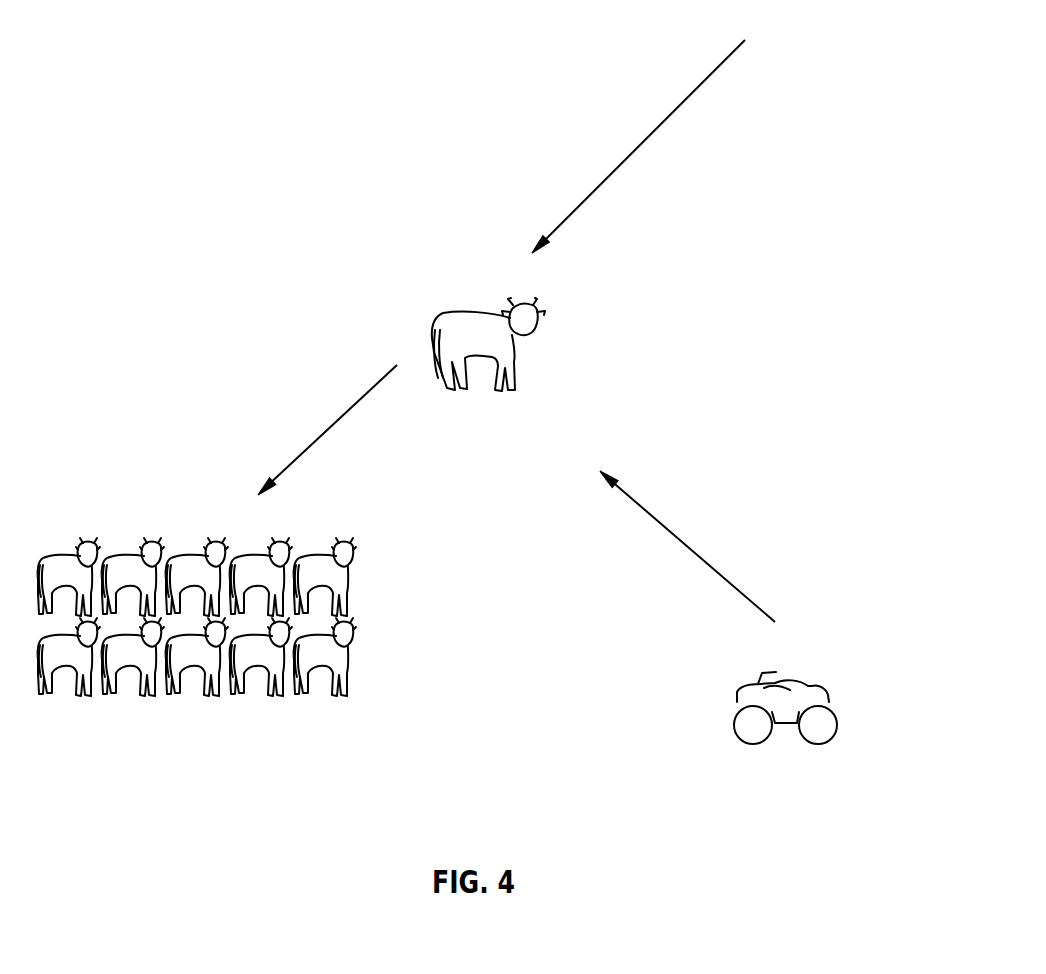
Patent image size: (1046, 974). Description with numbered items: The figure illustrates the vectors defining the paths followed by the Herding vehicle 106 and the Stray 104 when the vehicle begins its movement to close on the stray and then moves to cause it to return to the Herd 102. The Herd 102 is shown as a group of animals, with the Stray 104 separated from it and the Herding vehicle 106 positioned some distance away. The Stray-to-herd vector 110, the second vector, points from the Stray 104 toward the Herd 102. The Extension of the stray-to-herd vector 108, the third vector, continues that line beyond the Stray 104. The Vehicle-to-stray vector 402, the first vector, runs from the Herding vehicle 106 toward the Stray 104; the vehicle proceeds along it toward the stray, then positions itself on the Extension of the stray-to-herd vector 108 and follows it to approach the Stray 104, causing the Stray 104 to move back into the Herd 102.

The herd 102 is at (233, 740).
The stray 104 is at (518, 436).
The herding vehicle 106 is at (885, 789).
The extension of the stray-to-herd vector 108 is at (663, 102).
The stray-to-herd vector 110 is at (330, 396).
The vehicle-to-stray vector 402 is at (800, 521).